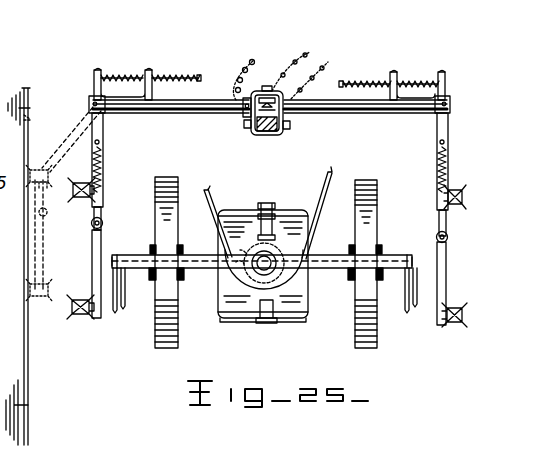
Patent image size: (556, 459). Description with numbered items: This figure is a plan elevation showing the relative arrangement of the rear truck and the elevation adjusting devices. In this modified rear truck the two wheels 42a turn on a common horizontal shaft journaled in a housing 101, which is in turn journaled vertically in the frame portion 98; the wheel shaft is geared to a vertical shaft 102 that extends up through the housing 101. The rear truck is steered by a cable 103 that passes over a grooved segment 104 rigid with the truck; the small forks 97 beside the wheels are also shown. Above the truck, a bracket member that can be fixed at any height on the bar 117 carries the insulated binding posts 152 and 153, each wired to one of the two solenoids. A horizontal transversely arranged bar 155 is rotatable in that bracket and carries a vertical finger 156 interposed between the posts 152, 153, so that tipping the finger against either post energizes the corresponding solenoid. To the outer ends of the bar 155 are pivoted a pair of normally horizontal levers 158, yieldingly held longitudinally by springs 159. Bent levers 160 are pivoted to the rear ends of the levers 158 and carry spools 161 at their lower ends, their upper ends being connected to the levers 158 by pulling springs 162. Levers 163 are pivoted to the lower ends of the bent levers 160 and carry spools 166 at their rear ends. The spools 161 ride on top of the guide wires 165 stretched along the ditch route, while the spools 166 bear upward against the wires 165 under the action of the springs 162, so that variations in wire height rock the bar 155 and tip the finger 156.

The wheel 42a is at (161, 348).
The fork 97 is at (265, 300).
The frame portion 98 is at (393, 267).
The housing 101 is at (307, 320).
The vertical shaft 102 is at (262, 266).
The cable 103 is at (331, 175).
The grooved segment 104 is at (283, 285).
The bar 117 is at (268, 131).
The binding post 152 is at (268, 88).
The binding post 153 is at (284, 128).
The horizontal transversely arranged bar 155 is at (170, 118).
The vertical finger 156 is at (295, 101).
The lever 158 is at (98, 128).
The spring 159 is at (167, 74).
The bent lever 160 is at (100, 212).
The spool 161 is at (80, 199).
The pulling spring 162 is at (100, 165).
The lever 163 is at (435, 270).
The guide wire 165 is at (93, 258).
The spool 166 is at (71, 313).